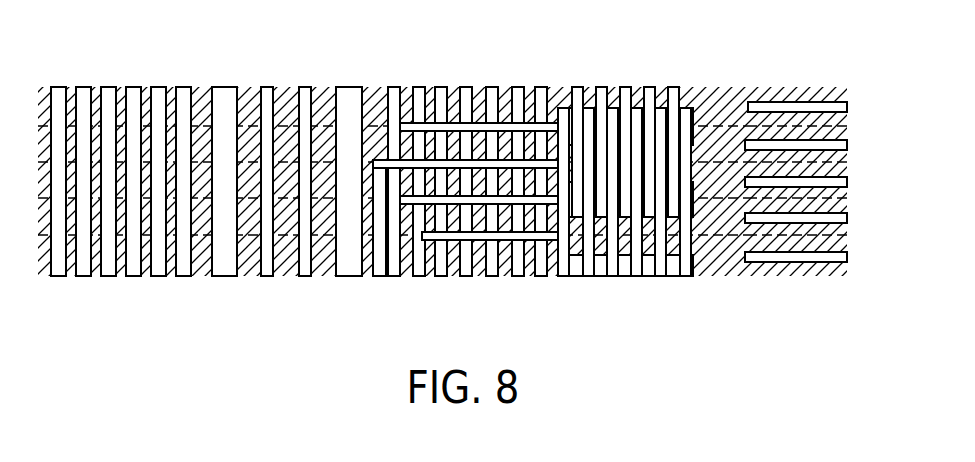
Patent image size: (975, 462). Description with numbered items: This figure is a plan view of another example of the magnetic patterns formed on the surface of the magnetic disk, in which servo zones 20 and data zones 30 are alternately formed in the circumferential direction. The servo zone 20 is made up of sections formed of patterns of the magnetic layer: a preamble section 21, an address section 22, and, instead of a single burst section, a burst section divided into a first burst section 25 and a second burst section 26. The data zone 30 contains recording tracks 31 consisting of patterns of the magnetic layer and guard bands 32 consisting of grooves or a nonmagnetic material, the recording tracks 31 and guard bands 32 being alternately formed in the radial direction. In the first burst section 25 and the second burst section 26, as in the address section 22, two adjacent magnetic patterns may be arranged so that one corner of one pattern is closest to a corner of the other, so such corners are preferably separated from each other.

The servo zone 20 is at (392, 183).
The preamble section 21 is at (52, 297).
The address section 22 is at (418, 297).
The first burst section (AB) 25 is at (545, 297).
The second burst section (CD) 26 is at (619, 220).
The data zone 30 is at (830, 145).
The recording track 31 is at (838, 127).
The guard band 32 is at (838, 108).